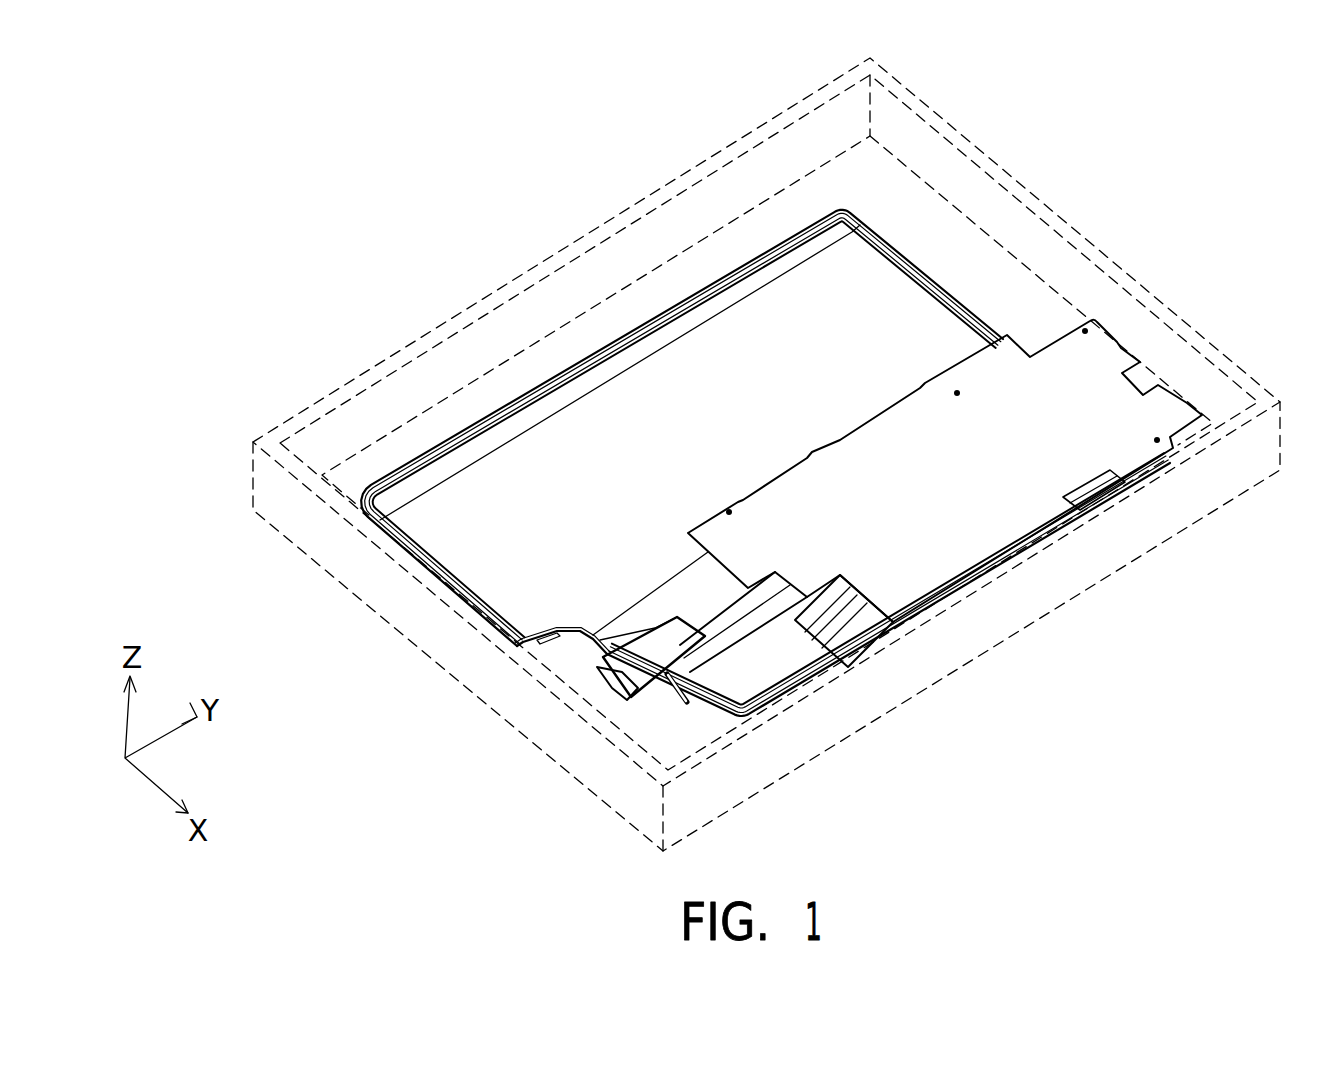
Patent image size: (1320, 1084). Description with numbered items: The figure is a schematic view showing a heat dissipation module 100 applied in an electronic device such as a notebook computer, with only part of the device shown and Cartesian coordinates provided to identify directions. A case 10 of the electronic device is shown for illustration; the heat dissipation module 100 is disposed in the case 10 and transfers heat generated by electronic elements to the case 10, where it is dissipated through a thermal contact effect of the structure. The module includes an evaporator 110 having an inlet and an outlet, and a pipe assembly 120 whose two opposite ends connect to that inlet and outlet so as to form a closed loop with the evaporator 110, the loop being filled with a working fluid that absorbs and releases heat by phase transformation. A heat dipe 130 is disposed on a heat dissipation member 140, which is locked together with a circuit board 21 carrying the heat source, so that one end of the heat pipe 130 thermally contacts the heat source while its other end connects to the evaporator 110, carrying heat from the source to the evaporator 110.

The case 10 is at (505, 276).
The heat dissipation module 100 is at (644, 292).
The heat dissipation member 140 is at (467, 562).
The pipe assembly 120 is at (500, 643).
The evaporator 110 is at (637, 670).
The heat pipe 130 is at (723, 627).
The circuit board 21 is at (982, 548).